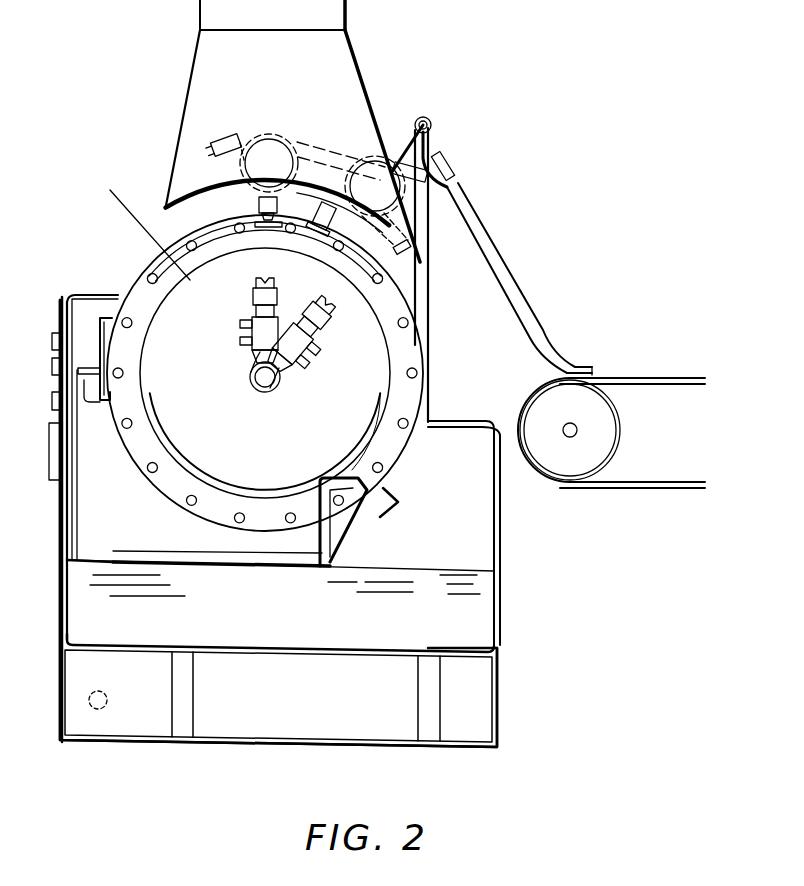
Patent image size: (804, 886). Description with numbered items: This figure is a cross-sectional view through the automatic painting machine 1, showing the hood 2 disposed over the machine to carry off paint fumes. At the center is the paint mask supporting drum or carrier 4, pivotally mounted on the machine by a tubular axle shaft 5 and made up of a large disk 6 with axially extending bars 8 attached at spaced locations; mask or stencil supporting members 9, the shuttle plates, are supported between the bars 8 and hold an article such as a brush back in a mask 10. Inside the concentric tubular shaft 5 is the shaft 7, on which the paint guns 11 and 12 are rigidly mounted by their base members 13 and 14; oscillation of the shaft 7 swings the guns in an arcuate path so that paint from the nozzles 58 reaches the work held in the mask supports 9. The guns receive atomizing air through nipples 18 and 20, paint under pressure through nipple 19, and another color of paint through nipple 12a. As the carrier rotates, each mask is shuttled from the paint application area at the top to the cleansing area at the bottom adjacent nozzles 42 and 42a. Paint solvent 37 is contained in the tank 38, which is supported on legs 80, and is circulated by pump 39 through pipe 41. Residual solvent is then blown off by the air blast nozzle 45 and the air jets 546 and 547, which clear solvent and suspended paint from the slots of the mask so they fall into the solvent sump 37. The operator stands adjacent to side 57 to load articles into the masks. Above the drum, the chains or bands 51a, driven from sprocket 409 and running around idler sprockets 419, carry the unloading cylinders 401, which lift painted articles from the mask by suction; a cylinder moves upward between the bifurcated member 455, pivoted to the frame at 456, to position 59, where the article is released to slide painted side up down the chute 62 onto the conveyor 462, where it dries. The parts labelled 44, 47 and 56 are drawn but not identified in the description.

The automatic painting machine 1 is at (60, 558).
The hood 2 is at (196, 50).
The paint mask supporting drum or carrier 4 is at (410, 397).
The tubular axle shaft 5 is at (262, 386).
The large disk 6 is at (397, 452).
The shaft 7 is at (270, 386).
The axially extending bars 8 is at (146, 273).
The mask or stencil supporting members 9 is at (213, 230).
The mask 10 is at (281, 229).
The paint gun 11 is at (300, 337).
The paint gun 12 is at (251, 320).
The nipple 12a is at (240, 324).
The base member 13 is at (290, 350).
The base member 14 is at (260, 354).
The nipple 18 is at (304, 349).
The nipple 19 is at (313, 333).
The nipple 20 is at (240, 341).
The paint solvent 37 is at (476, 603).
The tank 38 is at (500, 633).
The pump 39 is at (93, 707).
The pipe 41 is at (272, 568).
The nozzle 42 is at (365, 500).
The nozzle 42a is at (395, 500).
The support strut 44 is at (79, 523).
The air blast nozzle 45 is at (104, 397).
The roller 47 is at (560, 364).
The chains or bands 51a is at (305, 140).
The upper bracket 56 is at (96, 294).
The side 57 is at (60, 309).
The nozzles 58 is at (212, 152).
The position 59 is at (408, 160).
The chute 62 is at (493, 247).
The legs 80 is at (195, 689).
The unloading cylinders 401 is at (230, 143).
The sprocket 409 is at (130, 227).
The idler sprockets 419 is at (362, 177).
The bifurcated member 455 is at (448, 187).
The pivot 456 is at (431, 119).
The conveyor 462 is at (683, 377).
The air jets 546 is at (136, 315).
The air jets 547 is at (104, 372).